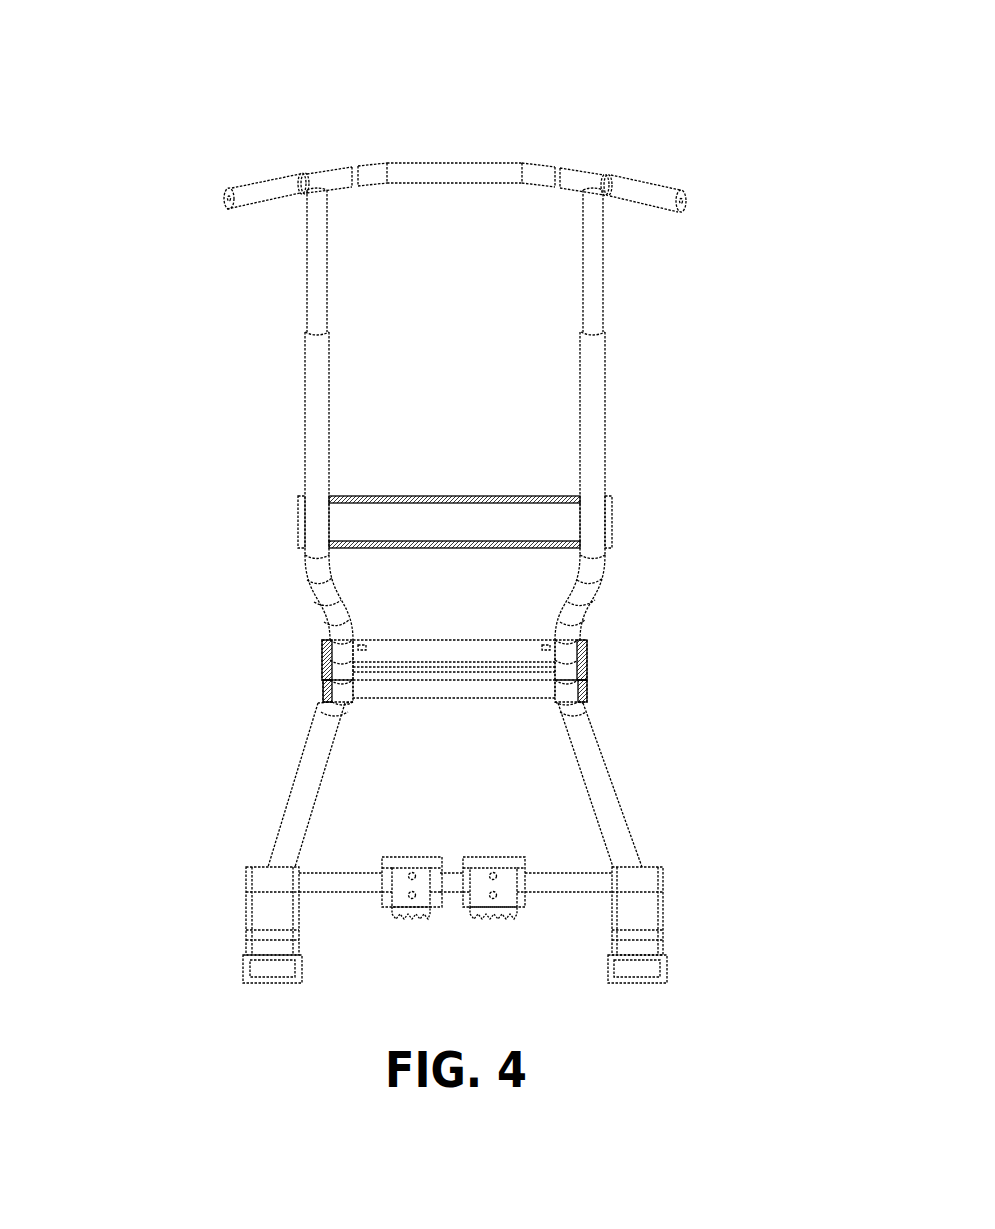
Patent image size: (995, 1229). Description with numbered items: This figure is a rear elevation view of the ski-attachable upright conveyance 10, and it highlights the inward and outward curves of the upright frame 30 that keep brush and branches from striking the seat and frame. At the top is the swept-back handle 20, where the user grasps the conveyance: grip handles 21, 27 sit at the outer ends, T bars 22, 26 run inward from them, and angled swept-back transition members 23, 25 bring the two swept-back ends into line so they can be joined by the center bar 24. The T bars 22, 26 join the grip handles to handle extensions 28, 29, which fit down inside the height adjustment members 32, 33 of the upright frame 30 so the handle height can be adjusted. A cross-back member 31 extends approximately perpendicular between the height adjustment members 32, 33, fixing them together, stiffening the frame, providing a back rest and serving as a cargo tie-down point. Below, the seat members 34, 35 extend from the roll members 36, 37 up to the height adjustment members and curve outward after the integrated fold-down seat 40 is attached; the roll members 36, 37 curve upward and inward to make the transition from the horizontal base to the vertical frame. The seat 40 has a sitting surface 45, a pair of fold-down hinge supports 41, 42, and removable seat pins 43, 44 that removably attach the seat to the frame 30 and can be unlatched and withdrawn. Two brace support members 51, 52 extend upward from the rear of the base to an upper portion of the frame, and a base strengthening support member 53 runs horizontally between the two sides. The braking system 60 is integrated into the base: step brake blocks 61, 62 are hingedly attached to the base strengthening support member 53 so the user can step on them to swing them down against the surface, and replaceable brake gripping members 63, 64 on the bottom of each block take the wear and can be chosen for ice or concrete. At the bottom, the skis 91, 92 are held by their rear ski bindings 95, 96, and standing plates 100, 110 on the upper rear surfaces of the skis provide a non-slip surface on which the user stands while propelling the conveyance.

The ski-attachable upright conveyance 10 is at (742, 103).
The swept-back handle 20 is at (295, 65).
The grip handle 21 is at (228, 212).
The T bar 22 is at (323, 175).
The swept-back transition member 23 is at (370, 165).
The center bar 24 is at (466, 163).
The swept-back transition member 25 is at (534, 165).
The T bar 26 is at (579, 170).
The grip handle 27 is at (660, 190).
The handle extension 28 is at (305, 302).
The handle extension 29 is at (605, 272).
The upright frame 30 is at (702, 352).
The cross-back member 31 is at (488, 497).
The height adjustment member 32 is at (305, 426).
The height adjustment member 33 is at (607, 423).
The seat member 34 is at (283, 587).
The seat member 35 is at (622, 618).
The roll member 36 is at (263, 750).
The roll member 37 is at (632, 731).
The integrated fold-down seat 40 is at (208, 600).
The fold-down hinge support 41 is at (320, 697).
The fold-down hinge support 42 is at (585, 695).
The removable seat pin 43 is at (320, 648).
The removable seat pin 44 is at (587, 645).
The sitting surface 45 is at (487, 640).
The brace support member 51 is at (303, 777).
The brace support member 52 is at (618, 812).
The base strengthening support member 53 is at (343, 873).
The braking system 60 is at (528, 980).
The step brake block 61 is at (388, 908).
The step brake block 62 is at (520, 905).
The brake gripping member 63 is at (420, 912).
The brake gripping member 64 is at (503, 912).
The ski 91 is at (275, 982).
The ski 92 is at (635, 982).
The rear ski binding 95 is at (260, 888).
The rear ski binding 96 is at (653, 885).
The standing plate 100 is at (217, 960).
The standing plate 110 is at (680, 970).